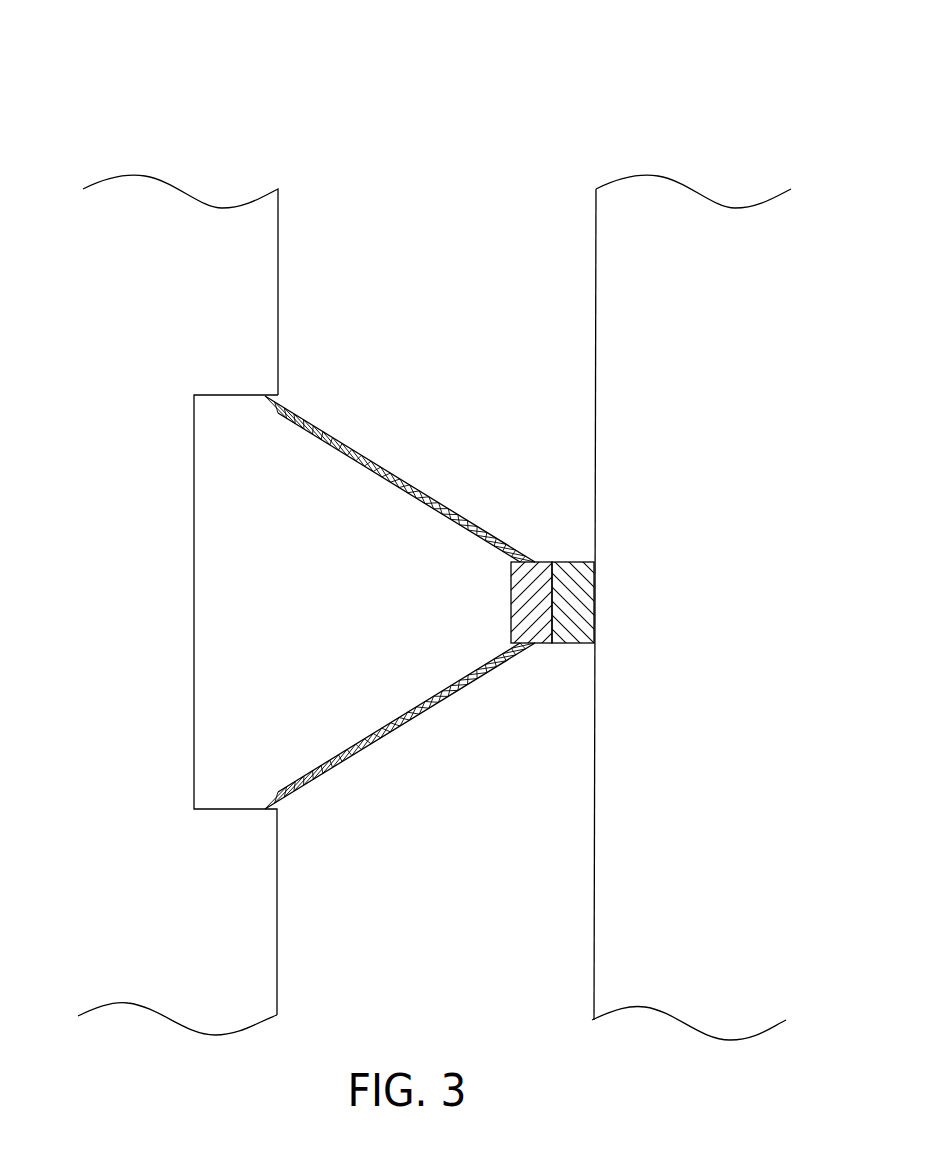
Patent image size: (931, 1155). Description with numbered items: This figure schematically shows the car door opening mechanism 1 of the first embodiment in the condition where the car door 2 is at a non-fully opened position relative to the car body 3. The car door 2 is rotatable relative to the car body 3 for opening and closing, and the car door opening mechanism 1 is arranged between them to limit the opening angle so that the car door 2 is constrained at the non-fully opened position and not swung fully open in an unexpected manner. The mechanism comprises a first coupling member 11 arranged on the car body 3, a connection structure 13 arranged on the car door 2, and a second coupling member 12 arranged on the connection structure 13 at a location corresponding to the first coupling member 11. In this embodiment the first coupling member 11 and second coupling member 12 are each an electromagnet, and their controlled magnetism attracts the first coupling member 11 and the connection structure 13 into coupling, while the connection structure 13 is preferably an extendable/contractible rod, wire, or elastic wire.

The car door opening mechanism 1 is at (593, 88).
The first coupling member 11 is at (577, 587).
The second coupling member 12 is at (538, 587).
The connection structure 13 is at (397, 468).
The car door 2 is at (97, 621).
The car body 3 is at (712, 621).